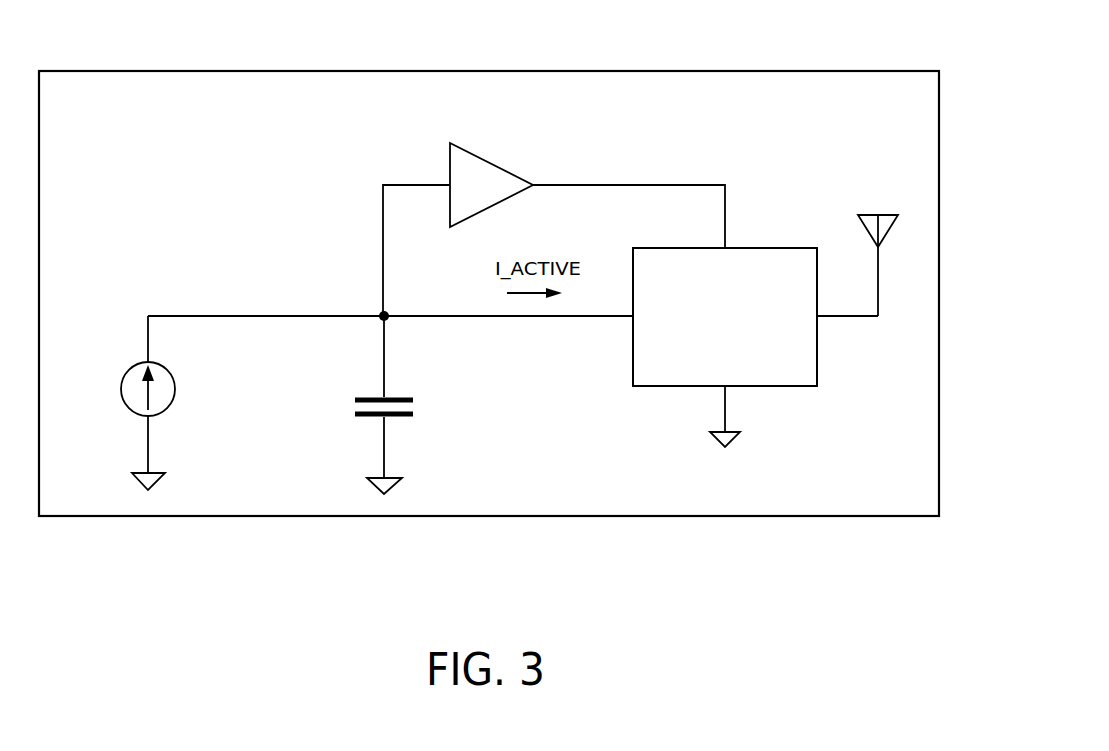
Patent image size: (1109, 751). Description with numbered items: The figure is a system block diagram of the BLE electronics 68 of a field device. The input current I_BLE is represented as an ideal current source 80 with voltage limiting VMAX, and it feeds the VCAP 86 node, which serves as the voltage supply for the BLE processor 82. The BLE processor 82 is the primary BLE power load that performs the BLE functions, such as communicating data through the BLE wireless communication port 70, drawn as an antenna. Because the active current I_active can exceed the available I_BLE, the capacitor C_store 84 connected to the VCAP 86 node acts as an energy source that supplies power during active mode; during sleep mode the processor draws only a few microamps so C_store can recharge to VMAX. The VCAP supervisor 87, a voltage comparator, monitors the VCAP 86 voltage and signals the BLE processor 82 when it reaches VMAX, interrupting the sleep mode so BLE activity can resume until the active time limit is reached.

The BLE electronics 68 is at (822, 71).
The BLE wireless communication port 70 is at (878, 270).
The current source 80 is at (168, 371).
The BLE processor 82 is at (725, 347).
The capacitor C_store 84 is at (420, 378).
The VCAP 86 is at (384, 316).
The VCAP supervisor 87 is at (510, 172).